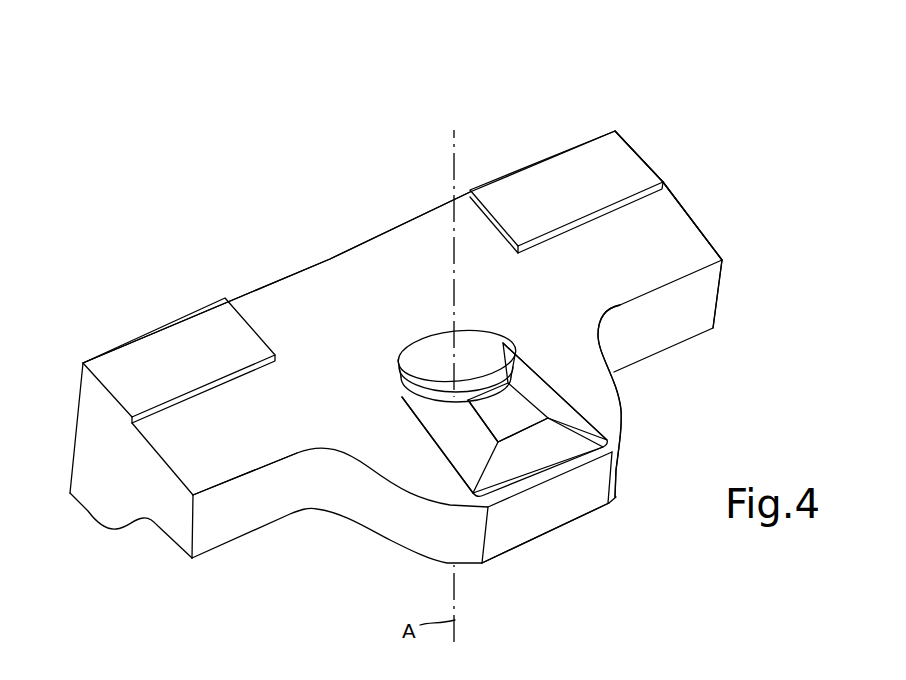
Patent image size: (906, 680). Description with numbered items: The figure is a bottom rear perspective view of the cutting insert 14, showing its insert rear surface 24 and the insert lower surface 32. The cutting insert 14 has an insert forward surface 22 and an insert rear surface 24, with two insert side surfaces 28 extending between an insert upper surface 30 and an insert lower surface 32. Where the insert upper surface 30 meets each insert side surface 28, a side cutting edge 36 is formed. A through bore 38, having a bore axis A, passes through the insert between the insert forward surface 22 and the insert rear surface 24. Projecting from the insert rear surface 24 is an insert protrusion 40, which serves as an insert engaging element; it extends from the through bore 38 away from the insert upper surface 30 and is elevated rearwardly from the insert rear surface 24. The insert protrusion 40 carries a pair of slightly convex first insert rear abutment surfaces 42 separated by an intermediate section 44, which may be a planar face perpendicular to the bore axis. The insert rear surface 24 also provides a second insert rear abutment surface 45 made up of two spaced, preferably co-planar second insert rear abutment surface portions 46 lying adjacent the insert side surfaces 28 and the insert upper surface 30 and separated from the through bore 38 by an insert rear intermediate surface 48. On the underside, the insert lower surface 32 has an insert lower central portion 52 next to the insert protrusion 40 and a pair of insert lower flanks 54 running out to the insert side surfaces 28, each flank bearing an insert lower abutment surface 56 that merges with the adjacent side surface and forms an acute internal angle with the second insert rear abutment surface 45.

The cutting insert 14 is at (625, 105).
The insert forward surface 22 is at (648, 373).
The insert rear surface 24 is at (650, 232).
The insert side surfaces 28 is at (132, 483).
The insert upper surface 30 is at (382, 170).
The insert lower surface 32 is at (588, 527).
The side cutting edge 36 is at (73, 427).
The through bore 38 is at (473, 350).
The insert protrusion 40 is at (462, 417).
The first insert rear abutment surfaces 42 is at (527, 380).
The intermediate section 44 is at (508, 413).
The second insert rear abutment surface 45 is at (530, 208).
The second insert rear abutment surface portions 46 is at (137, 370).
The insert rear intermediate surface 48 is at (315, 362).
The insert lower central portion 52 is at (520, 528).
The insert lower flanks 54 is at (383, 498).
The insert lower abutment surface 56 is at (206, 527).